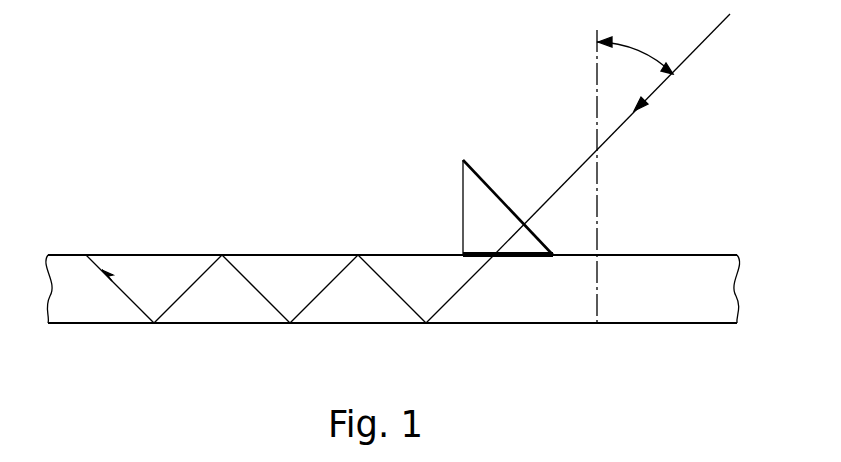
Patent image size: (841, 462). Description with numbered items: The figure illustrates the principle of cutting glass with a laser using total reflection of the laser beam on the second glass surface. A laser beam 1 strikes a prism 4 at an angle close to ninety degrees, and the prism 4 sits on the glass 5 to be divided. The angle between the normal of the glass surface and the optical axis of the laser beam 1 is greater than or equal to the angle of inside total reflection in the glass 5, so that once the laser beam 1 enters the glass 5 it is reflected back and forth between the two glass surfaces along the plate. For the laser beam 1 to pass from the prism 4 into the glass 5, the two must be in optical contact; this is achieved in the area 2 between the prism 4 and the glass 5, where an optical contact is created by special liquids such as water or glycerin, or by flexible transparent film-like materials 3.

The laser beam 1 is at (574, 168).
The area 2 is at (469, 218).
The transparent materials 3 is at (540, 250).
The prism 4 is at (477, 192).
The glass 5 is at (653, 290).